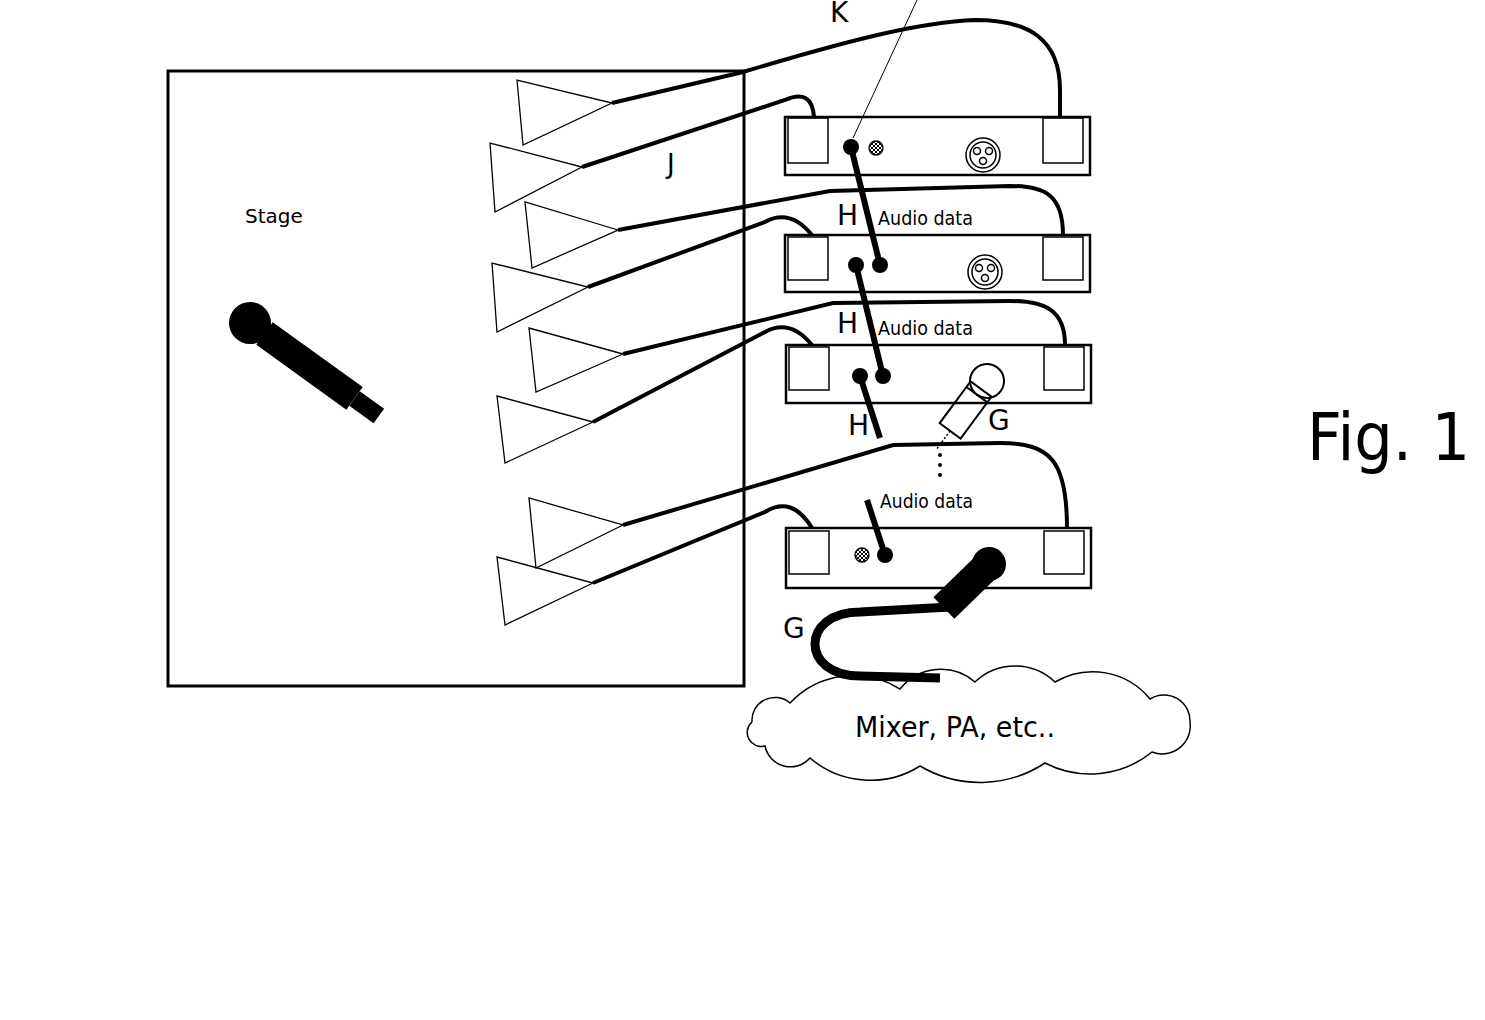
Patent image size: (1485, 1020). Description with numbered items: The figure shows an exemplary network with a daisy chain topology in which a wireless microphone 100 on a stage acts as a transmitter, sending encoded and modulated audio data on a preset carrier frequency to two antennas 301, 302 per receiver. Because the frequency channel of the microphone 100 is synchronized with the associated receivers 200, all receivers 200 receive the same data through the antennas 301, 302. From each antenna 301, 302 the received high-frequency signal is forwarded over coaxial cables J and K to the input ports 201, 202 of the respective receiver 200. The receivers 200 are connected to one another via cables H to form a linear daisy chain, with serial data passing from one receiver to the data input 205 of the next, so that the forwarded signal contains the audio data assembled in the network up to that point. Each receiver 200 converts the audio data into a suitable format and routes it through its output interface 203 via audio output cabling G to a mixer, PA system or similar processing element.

The wireless microphone 100 is at (292, 372).
The receivers 200 is at (1092, 570).
The input port 201 is at (817, 118).
The input port 202 is at (1088, 140).
The output interface 203 is at (993, 138).
The data input 205 is at (880, 142).
The antenna 301 is at (493, 143).
The antenna 302 is at (523, 78).